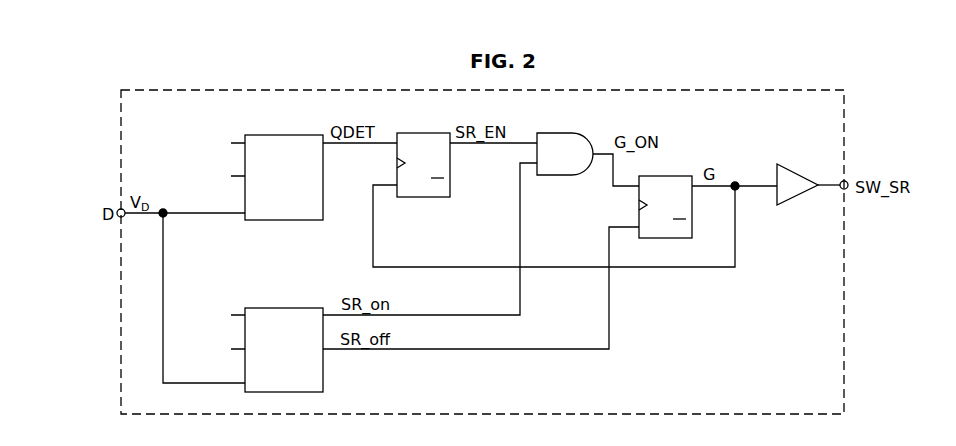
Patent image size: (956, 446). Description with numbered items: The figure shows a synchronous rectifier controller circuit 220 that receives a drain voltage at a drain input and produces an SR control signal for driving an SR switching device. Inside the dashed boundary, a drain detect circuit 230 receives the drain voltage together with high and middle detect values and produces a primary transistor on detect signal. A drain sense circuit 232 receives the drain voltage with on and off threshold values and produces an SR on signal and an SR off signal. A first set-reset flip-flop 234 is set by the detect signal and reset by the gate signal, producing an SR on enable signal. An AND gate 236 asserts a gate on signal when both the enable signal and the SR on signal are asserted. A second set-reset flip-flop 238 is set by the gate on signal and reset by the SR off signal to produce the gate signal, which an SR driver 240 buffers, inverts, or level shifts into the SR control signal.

The SR controller circuit 220 is at (240, 89).
The drain detect circuit 230 is at (283, 135).
The drain sense circuit 232 is at (283, 308).
The first set-reset flip-flop 234 is at (422, 133).
The AND gate 236 is at (557, 133).
The second set-reset flip-flop 238 is at (665, 176).
The SR driver 240 is at (797, 196).